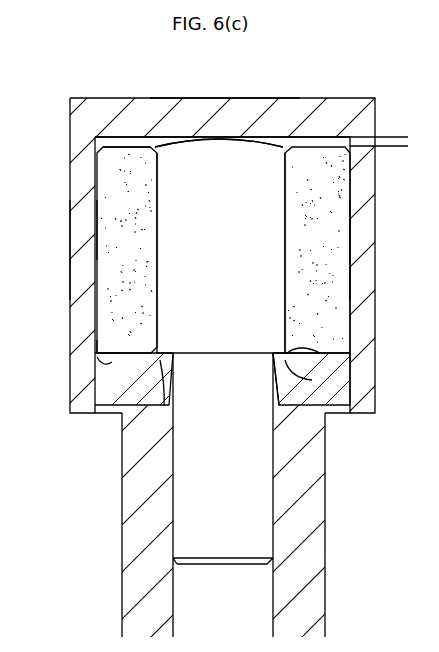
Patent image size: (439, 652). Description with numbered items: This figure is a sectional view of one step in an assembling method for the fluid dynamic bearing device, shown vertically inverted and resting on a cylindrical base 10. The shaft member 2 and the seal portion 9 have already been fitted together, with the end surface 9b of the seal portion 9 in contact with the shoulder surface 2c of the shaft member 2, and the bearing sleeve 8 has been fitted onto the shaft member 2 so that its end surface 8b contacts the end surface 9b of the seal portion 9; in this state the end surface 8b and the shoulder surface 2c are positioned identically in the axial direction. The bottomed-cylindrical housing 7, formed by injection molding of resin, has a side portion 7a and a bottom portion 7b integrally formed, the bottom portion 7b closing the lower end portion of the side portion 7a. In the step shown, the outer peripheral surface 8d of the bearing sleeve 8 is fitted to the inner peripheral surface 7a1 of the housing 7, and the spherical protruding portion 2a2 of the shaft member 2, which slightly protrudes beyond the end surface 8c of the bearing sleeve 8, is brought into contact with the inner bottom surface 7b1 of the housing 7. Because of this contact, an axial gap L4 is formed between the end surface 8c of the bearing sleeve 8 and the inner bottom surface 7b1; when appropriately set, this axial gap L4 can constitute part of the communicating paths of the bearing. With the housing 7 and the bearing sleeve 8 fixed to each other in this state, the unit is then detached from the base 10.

The housing 7 is at (68, 146).
The side portion 7a is at (82, 281).
The bottom portion 7b is at (303, 112).
The inner bottom surface 7b1 is at (176, 144).
The inner peripheral surface 7a1 is at (344, 236).
The bearing sleeve 8 is at (121, 193).
The end surface 8c is at (118, 136).
The outer peripheral surface 8d is at (96, 229).
The end surface 8b is at (105, 363).
The seal portion 9 is at (100, 386).
The end surface 9b is at (330, 333).
The shaft member 2 is at (290, 207).
The spherical protruding portion 2a2 is at (258, 140).
The shoulder surface 2c is at (305, 380).
The base 10 is at (330, 498).
The axial gap L4 is at (403, 112).